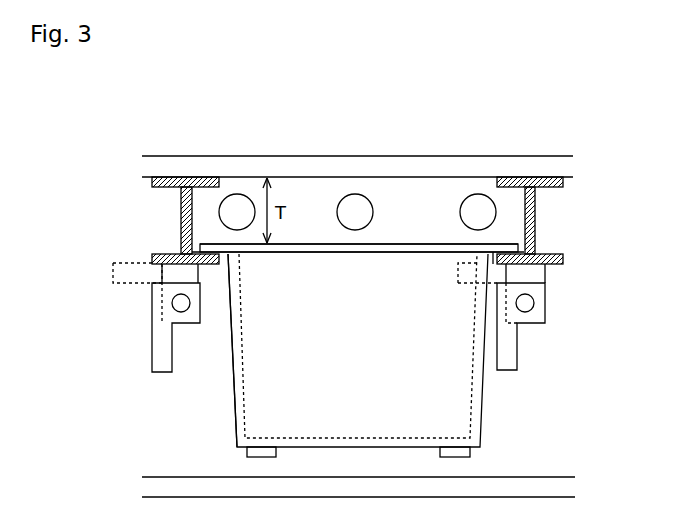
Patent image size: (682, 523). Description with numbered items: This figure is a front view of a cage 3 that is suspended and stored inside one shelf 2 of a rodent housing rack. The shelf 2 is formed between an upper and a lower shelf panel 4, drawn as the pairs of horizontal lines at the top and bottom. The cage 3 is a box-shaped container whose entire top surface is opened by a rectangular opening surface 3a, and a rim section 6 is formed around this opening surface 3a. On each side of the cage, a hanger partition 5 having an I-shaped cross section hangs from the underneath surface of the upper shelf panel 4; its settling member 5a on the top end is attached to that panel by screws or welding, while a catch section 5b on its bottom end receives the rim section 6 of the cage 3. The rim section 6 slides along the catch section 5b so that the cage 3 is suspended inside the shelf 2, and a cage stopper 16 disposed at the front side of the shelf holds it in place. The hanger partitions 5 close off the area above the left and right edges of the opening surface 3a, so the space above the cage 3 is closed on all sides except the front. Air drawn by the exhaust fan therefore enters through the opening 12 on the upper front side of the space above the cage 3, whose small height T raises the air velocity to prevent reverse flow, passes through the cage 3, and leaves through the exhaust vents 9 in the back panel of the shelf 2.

The shelf 2 is at (203, 410).
The cage 3 is at (458, 423).
The opening surface 3a is at (428, 243).
The shelf panel 4 is at (515, 164).
The hanger partition 5 is at (390, 216).
The settling member 5a is at (563, 181).
The catch section 5b is at (563, 258).
The rim section 6 is at (446, 250).
The exhaust vent 9 is at (367, 210).
The opening 12 is at (308, 226).
The cage stopper 16 is at (152, 360).